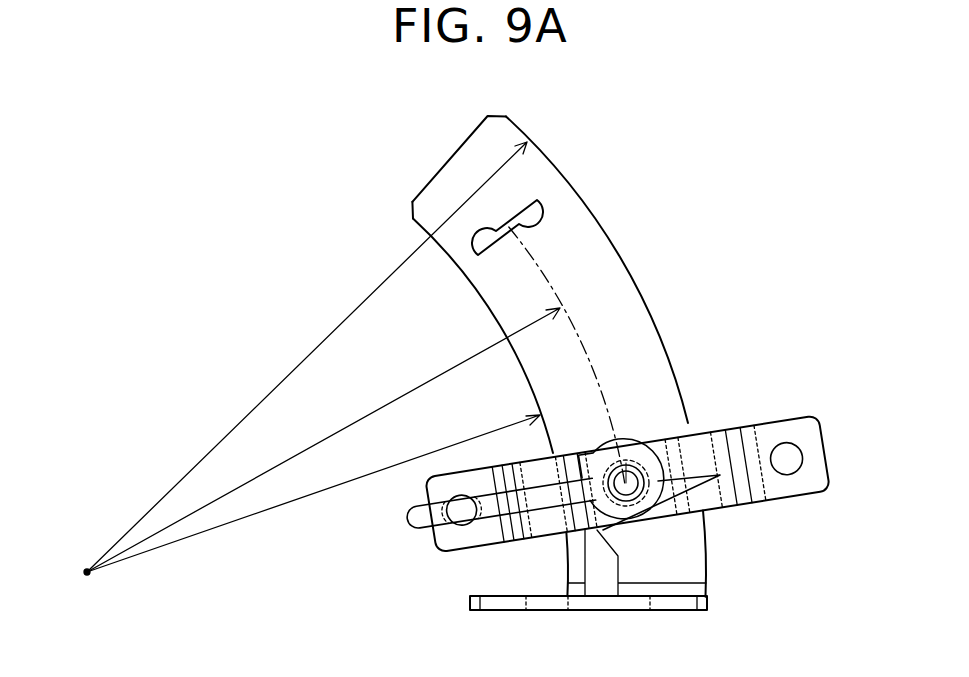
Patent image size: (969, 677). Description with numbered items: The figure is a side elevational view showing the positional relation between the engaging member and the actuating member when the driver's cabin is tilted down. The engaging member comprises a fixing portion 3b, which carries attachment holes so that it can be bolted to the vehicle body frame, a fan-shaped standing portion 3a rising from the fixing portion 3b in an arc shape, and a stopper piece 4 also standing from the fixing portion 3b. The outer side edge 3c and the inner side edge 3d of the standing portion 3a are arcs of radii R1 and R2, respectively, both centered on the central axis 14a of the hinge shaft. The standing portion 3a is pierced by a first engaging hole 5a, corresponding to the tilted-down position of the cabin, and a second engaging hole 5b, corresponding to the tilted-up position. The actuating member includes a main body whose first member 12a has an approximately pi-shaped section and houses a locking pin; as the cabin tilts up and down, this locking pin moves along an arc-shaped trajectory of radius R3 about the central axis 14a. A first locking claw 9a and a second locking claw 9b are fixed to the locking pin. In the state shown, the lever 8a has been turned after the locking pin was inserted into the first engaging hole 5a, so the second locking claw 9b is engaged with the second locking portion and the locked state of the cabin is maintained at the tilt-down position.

The standing portion 3a is at (490, 140).
The fixing portion 3b is at (543, 603).
The outer side edge 3c is at (643, 295).
The inner side edge 3d is at (477, 293).
The stopper piece 4 is at (605, 567).
The first engaging hole 5a is at (677, 435).
The second engaging hole 5b is at (533, 212).
The lever 8a is at (418, 523).
The first locking claw 9a is at (707, 483).
The second locking claw 9b is at (557, 460).
The first member 12a is at (547, 540).
The central axis 14a is at (92, 587).
The radius R1 is at (307, 357).
The radius R2 is at (313, 493).
The radius R3 is at (323, 440).